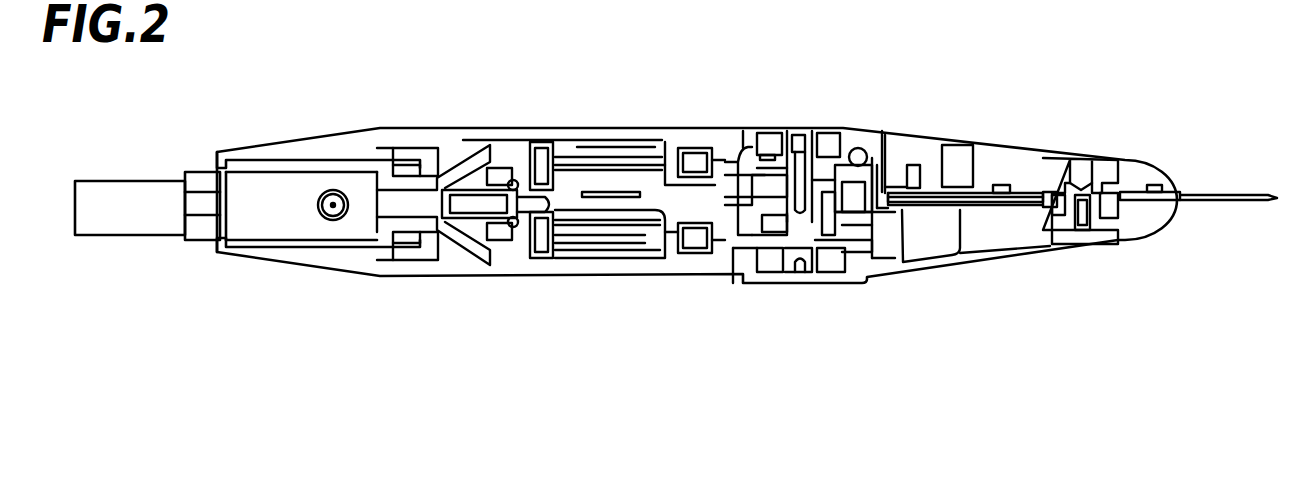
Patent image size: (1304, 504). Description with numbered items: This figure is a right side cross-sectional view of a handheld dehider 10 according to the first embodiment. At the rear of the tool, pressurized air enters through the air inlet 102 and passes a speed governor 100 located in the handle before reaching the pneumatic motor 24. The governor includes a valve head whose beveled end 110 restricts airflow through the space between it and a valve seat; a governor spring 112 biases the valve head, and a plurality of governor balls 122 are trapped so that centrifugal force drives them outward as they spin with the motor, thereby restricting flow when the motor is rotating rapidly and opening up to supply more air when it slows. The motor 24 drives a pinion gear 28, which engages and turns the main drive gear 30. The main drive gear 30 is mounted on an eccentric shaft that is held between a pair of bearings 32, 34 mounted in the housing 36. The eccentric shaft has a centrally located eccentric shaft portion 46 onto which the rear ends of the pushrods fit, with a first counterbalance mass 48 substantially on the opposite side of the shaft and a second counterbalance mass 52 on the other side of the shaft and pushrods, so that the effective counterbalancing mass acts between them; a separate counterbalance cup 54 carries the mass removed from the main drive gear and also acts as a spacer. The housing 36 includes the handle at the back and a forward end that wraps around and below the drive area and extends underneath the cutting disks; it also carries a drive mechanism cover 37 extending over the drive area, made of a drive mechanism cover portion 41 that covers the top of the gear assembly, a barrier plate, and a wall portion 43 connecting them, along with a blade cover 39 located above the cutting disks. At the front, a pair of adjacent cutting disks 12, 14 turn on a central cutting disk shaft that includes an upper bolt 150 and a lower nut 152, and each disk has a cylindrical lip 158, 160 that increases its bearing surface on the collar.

The handheld dehider 10 is at (778, 62).
The cutting disk 12 is at (1222, 192).
The cutting disk 14 is at (1225, 203).
The pneumatic motor 24 is at (608, 185).
The pinion gear 28 is at (735, 228).
The main drive gear 30 is at (840, 150).
The bearing 32 is at (826, 140).
The bearing 34 is at (833, 264).
The housing 36 is at (935, 265).
The drive mechanism cover 37 is at (878, 142).
The blade cover 39 is at (1013, 162).
The drive mechanism cover portion 41 is at (760, 150).
The wall portion 43 is at (892, 192).
The eccentric shaft portion 46 is at (800, 247).
The first counterbalance mass 48 is at (768, 268).
The second counterbalance mass 52 is at (783, 190).
The counterbalance cup 54 is at (745, 148).
The speed governor 100 is at (470, 138).
The air inlet 102 is at (333, 190).
The beveled end 110 is at (450, 222).
The governor spring 112 is at (482, 232).
The governor balls 122 is at (518, 148).
The upper bolt 150 is at (1060, 170).
The lower nut 152 is at (1108, 242).
The cylindrical lip 158 is at (1120, 187).
The cylindrical lip 160 is at (1125, 208).